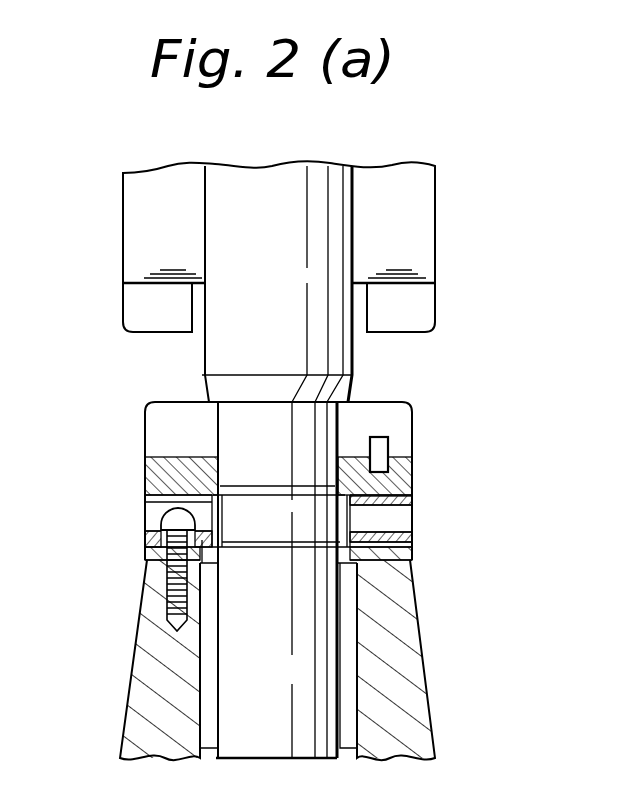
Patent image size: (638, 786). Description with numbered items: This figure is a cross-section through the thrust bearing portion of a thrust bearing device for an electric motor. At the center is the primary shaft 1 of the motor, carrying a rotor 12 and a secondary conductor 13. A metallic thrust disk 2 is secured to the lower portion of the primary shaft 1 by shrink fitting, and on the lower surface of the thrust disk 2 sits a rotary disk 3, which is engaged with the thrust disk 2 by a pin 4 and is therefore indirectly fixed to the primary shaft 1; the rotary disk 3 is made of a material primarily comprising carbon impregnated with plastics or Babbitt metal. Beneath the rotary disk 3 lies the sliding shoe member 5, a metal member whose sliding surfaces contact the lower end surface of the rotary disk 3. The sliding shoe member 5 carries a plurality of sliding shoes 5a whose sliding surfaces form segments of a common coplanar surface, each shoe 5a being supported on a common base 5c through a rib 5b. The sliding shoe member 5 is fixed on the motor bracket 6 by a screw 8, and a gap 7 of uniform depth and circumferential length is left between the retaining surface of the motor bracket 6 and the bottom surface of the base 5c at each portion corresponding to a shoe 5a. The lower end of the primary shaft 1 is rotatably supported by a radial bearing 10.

The primary shaft 1 is at (353, 204).
The thrust disk 2 is at (412, 430).
The rotary disk 3 is at (147, 488).
The pin 4 is at (388, 445).
The sliding shoe member 5 is at (145, 517).
The sliding shoe 5a is at (146, 497).
The rib 5b is at (412, 518).
The base 5c is at (145, 535).
The motor bracket 6 is at (421, 650).
The gap 7 is at (415, 567).
The screw 8 is at (160, 570).
The radial bearing 10 is at (198, 690).
The rotor 12 is at (436, 245).
The secondary conductor 13 is at (436, 312).